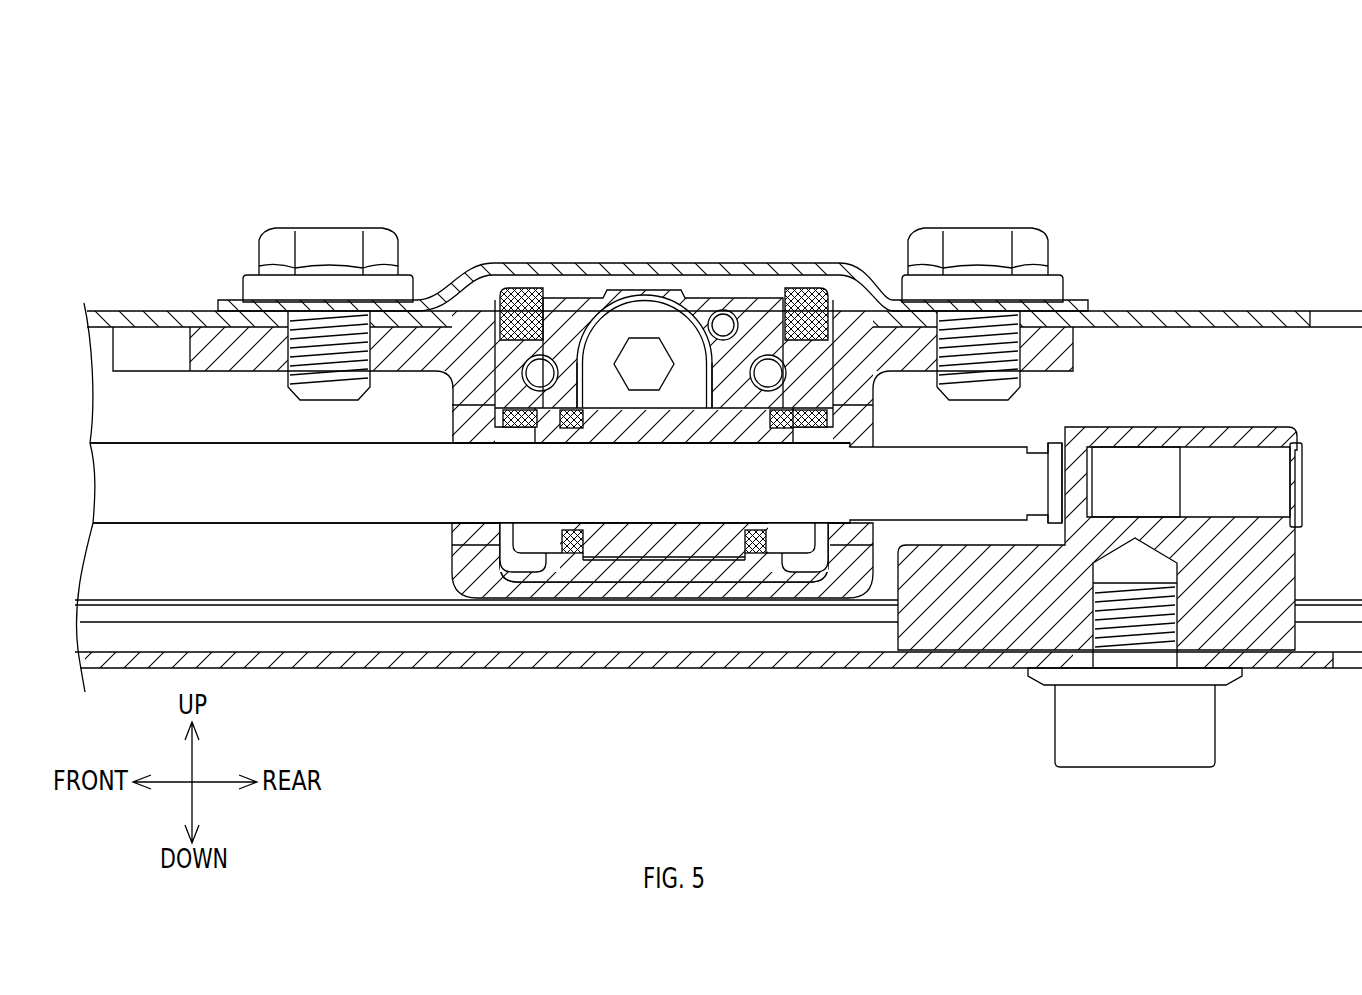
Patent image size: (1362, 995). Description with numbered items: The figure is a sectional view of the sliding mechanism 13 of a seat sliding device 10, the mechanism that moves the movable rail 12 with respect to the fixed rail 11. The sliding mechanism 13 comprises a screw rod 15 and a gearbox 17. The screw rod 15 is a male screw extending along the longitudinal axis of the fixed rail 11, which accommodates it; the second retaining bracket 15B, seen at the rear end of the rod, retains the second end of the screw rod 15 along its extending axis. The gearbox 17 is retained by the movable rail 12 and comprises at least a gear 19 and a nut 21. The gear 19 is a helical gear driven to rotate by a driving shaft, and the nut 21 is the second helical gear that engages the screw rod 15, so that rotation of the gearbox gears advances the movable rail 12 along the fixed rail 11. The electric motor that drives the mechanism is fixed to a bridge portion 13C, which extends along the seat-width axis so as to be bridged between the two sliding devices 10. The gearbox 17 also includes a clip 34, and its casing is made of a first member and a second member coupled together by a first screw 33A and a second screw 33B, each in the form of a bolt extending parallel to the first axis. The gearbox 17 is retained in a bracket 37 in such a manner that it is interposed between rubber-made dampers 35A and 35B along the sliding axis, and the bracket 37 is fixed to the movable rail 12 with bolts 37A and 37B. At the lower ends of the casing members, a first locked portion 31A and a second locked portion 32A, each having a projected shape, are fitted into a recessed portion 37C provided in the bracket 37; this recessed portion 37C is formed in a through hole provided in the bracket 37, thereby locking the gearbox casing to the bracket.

The sliding device 10 is at (718, 97).
The fixed rail 11 is at (737, 668).
The movable rail 12 is at (1165, 311).
The sliding mechanism 13 is at (712, 297).
The bridge portion 13C is at (709, 286).
The screw rod 15 is at (380, 523).
The second retaining bracket 15B is at (1200, 427).
The gearbox 17 is at (660, 298).
The gear 19 is at (635, 320).
The nut 21 is at (628, 560).
The first locked portion 31A is at (631, 675).
The second locked portion 32A is at (567, 582).
The first screw 33A is at (542, 355).
The second screw 33B is at (768, 355).
The clip 34 is at (520, 572).
The damper 35A is at (820, 290).
The damper 35B is at (515, 288).
The bracket 37 is at (870, 590).
The bolt 37A is at (988, 228).
The bolt 37B is at (345, 228).
The recessed portion 37C is at (773, 580).